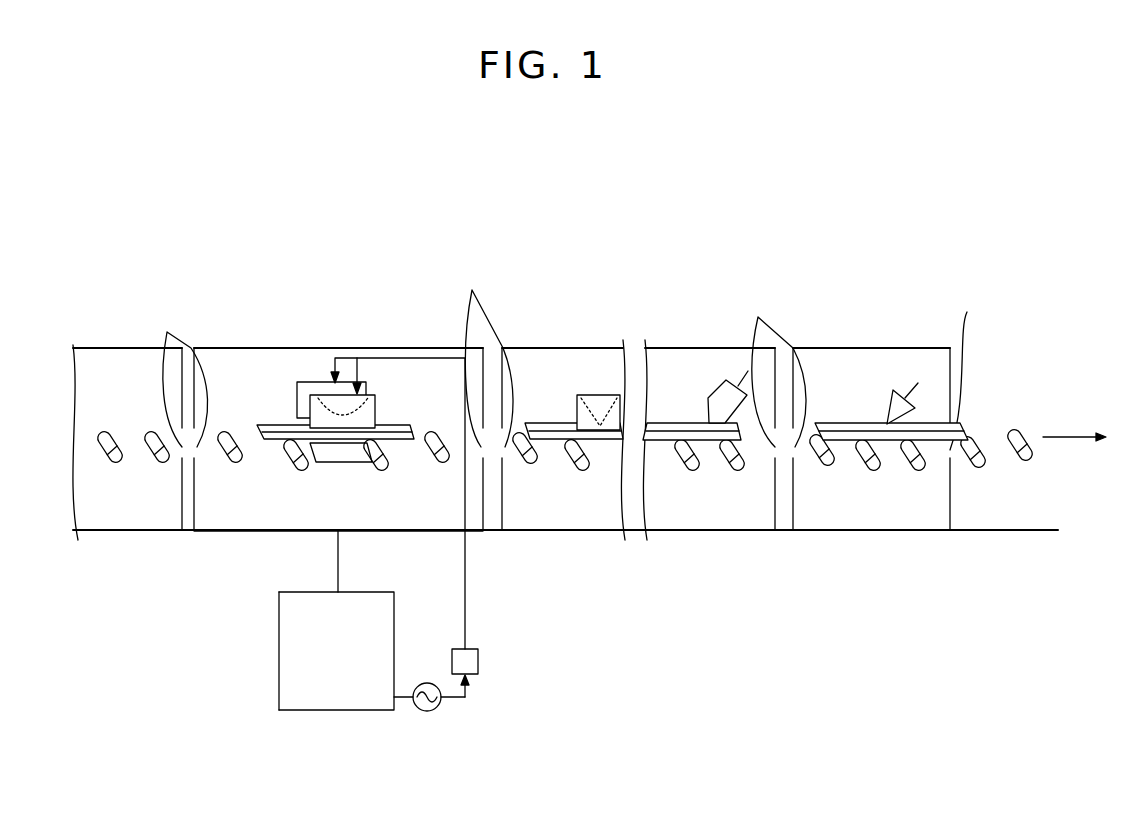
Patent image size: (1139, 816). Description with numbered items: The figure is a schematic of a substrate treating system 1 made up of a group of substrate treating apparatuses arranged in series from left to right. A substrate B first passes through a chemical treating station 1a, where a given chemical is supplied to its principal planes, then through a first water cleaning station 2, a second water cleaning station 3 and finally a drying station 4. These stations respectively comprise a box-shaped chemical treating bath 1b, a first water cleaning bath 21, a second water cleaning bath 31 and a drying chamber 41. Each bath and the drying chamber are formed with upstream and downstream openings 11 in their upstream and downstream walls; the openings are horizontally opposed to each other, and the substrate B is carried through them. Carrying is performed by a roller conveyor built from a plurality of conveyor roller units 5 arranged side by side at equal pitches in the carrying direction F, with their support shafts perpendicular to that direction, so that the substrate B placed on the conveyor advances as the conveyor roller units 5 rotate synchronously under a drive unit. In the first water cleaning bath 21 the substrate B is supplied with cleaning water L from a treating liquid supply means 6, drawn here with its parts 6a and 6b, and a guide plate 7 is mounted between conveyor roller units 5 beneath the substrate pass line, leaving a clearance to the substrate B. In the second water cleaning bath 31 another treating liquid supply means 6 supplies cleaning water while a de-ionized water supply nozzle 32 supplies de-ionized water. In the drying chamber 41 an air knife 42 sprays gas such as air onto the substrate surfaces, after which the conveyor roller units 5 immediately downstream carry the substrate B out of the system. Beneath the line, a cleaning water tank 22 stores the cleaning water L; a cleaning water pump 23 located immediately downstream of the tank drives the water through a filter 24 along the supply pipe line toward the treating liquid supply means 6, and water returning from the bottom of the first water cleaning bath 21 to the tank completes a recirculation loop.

The substrate treating system 1 is at (708, 204).
The chemical treating station 1a is at (117, 337).
The chemical treating bath 1b is at (87, 348).
The first water cleaning station 2 is at (392, 338).
The first water cleaning bath 21 is at (223, 348).
The second water cleaning station 3 is at (587, 338).
The second water cleaning bath 31 is at (540, 348).
The drying station 4 is at (823, 338).
The drying chamber 41 is at (883, 348).
The conveyor roller units 5 is at (238, 462).
The treating liquid supply means 6 is at (362, 306).
The electrode 6a is at (319, 400).
The electrode 6b is at (302, 385).
The guide plate 7 is at (338, 452).
The upstream and downstream openings 11 is at (566, 393).
The cleaning water tank 22 is at (322, 700).
The cleaning water pump 23 is at (420, 717).
The filter 24 is at (478, 664).
The de-ionized water supply nozzle 32 is at (716, 390).
The air knife 42 is at (888, 410).
The substrate B is at (273, 425).
The carrying direction F is at (1088, 438).
The cleaning water L is at (287, 665).